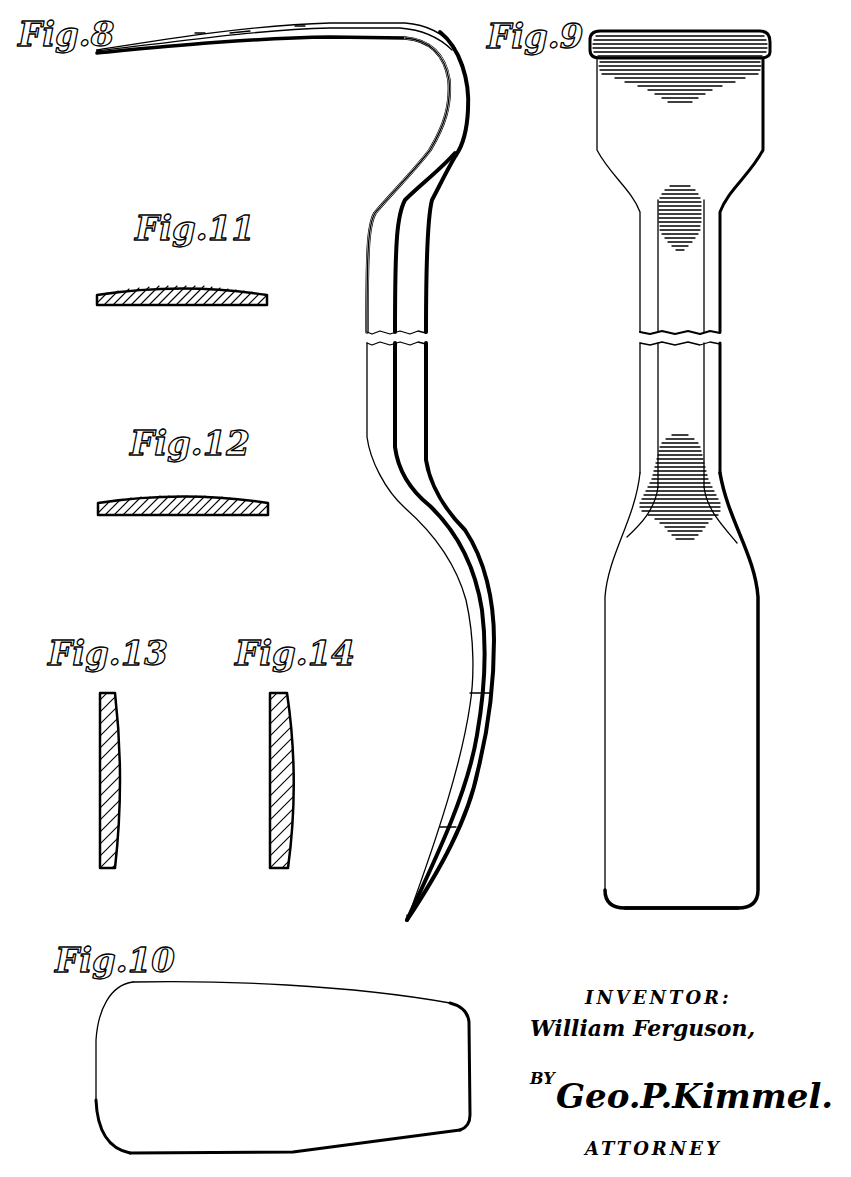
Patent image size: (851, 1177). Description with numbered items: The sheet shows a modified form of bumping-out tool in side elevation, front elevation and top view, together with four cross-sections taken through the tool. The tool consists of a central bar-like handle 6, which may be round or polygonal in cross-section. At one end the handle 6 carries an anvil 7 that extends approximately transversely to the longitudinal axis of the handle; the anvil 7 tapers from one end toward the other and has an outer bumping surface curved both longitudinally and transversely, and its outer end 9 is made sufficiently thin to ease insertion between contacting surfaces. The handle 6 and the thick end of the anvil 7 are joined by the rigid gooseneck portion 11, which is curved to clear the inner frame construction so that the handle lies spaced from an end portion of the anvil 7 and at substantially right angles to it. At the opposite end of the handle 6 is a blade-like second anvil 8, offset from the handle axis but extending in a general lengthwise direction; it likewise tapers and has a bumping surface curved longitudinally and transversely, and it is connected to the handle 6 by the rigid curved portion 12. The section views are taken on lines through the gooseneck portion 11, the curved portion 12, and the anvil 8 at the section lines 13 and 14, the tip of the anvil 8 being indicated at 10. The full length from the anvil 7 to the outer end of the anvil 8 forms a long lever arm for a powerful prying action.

In FIG. 8, the handle 6 is at (428, 380).
In FIG. 9, the handle 6 is at (655, 293).
In FIG. 8, the anvil 7 is at (239, 31).
In FIG. 9, the anvil 7 is at (682, 31).
In FIG. 10, the anvil 7 is at (235, 995).
In FIG. 8, the second anvil 8 is at (492, 667).
In FIG. 9, the second anvil 8 is at (632, 760).
In FIG. 8, the outer end of the anvil 9 is at (97, 52).
In FIG. 9, the outer end of the anvil 9 is at (681, 60).
In FIG. 10, the outer end of the anvil 9 is at (95, 1063).
In FIG. 8, the lower tip end 10 is at (407, 921).
In FIG. 9, the lower tip end 10 is at (672, 908).
In FIG. 8, the gooseneck portion 11 is at (200, 68).
In FIG. 11, the gooseneck portion 11 is at (182, 295).
In FIG. 10, the gooseneck portion 11 is at (470, 1063).
In FIG. 8, the curved portion 12 is at (300, 65).
In FIG. 12, the curved portion 12 is at (183, 505).
In FIG. 8, the section of blade (FIG. 13) 13 is at (397, 800).
In FIG. 13, the section of blade (FIG. 13) 13 is at (110, 786).
In FIG. 8, the section of blade (FIG. 14) 14 is at (447, 665).
In FIG. 14, the section of blade (FIG. 14) 14 is at (282, 783).